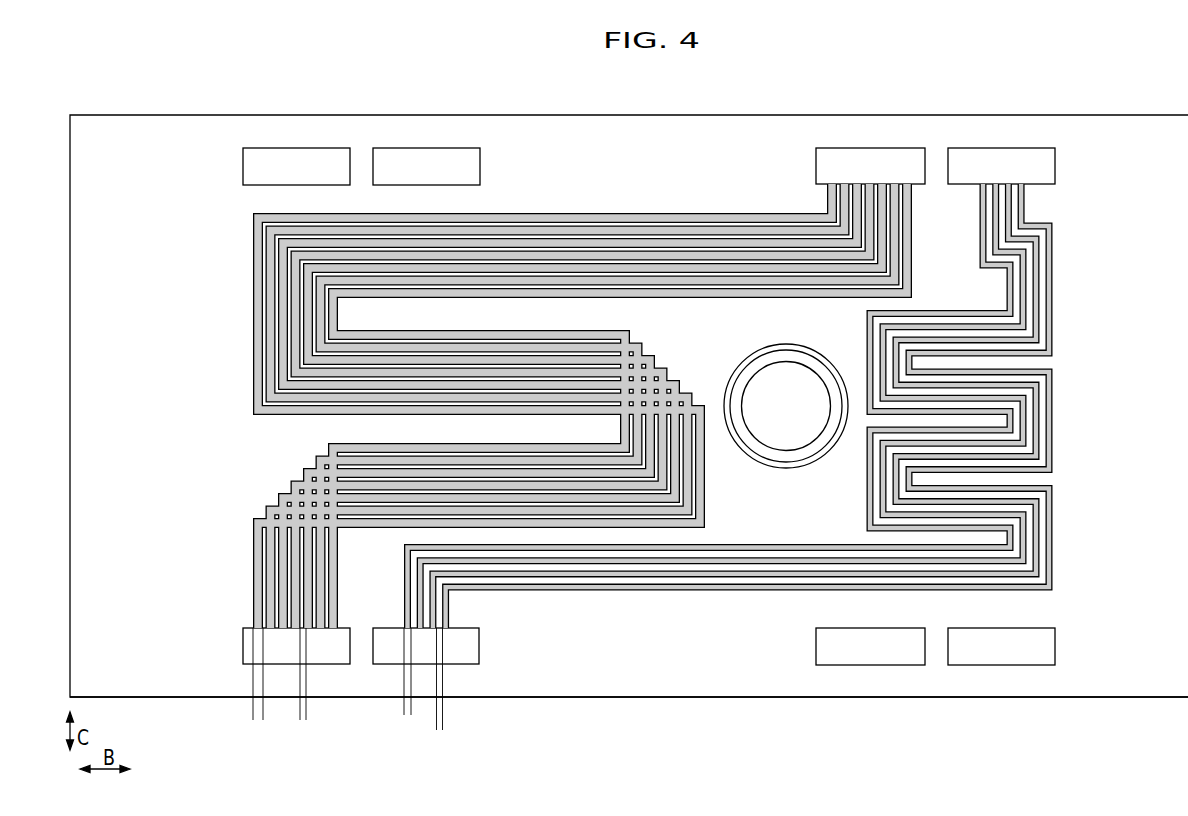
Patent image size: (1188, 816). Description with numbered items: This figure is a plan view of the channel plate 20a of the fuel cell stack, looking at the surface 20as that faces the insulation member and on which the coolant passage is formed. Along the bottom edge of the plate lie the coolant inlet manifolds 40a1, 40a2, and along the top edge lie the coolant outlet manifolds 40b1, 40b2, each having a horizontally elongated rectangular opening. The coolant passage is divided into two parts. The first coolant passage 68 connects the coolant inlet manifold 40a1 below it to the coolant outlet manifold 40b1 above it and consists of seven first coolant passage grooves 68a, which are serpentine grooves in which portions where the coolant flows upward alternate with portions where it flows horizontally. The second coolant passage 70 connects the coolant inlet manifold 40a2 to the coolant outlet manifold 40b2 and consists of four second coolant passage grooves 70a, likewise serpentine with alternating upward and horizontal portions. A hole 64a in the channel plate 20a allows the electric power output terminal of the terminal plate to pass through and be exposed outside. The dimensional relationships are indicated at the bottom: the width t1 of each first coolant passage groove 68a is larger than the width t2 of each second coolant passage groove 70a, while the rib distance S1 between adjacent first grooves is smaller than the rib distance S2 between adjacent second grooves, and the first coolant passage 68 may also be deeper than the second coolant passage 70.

The channel plate 20a is at (234, 97).
The surface of the channel plate 20as is at (1139, 657).
The coolant inlet manifold 40a1 is at (294, 160).
The coolant inlet manifold 40a2 is at (425, 160).
The coolant outlet manifold 40b1 is at (870, 160).
The coolant outlet manifold 40b2 is at (1000, 160).
The first coolant passage 68 is at (520, 406).
The first coolant passage grooves 68a is at (373, 483).
The second coolant passage 70 is at (787, 414).
The second coolant passage grooves 70a is at (447, 601).
The hole 64a is at (773, 438).
The width of the first coolant passage grooves t1 is at (272, 717).
The rib distance between adjacent first coolant passage grooves S1 is at (288, 717).
The width of the second coolant passage grooves t2 is at (420, 711).
The rib distance between adjacent second coolant passage grooves S2 is at (426, 726).